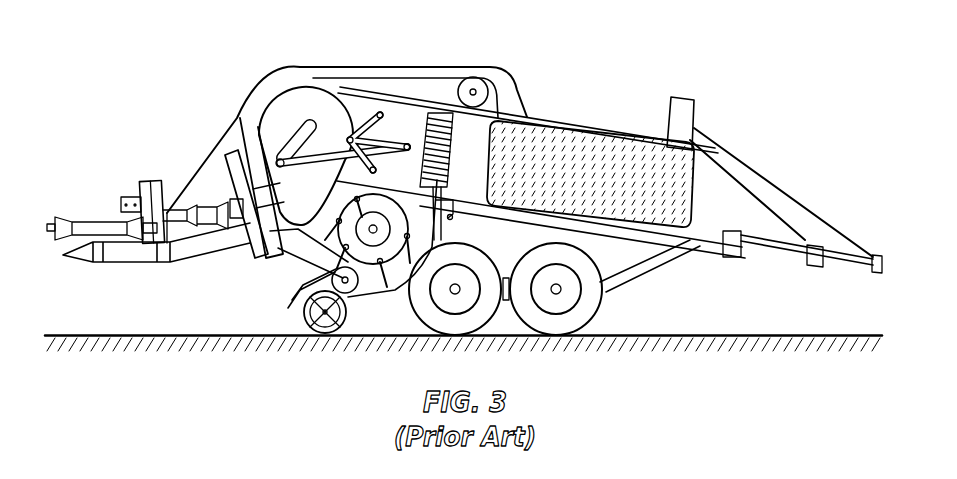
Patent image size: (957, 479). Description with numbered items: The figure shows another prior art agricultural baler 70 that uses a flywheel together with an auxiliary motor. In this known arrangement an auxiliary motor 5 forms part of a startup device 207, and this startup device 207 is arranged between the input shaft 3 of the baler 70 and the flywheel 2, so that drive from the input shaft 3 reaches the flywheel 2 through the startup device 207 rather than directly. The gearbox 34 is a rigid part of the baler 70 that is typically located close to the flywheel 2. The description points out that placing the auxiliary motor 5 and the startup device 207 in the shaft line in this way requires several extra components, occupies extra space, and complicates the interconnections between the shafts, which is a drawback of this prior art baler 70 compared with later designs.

The agricultural baler 70 is at (463, 190).
The startup device 207 is at (143, 176).
The flywheel 2 is at (237, 137).
The gearbox 34 is at (300, 97).
The auxiliary motor 5 is at (132, 200).
The input shaft 3 is at (87, 223).